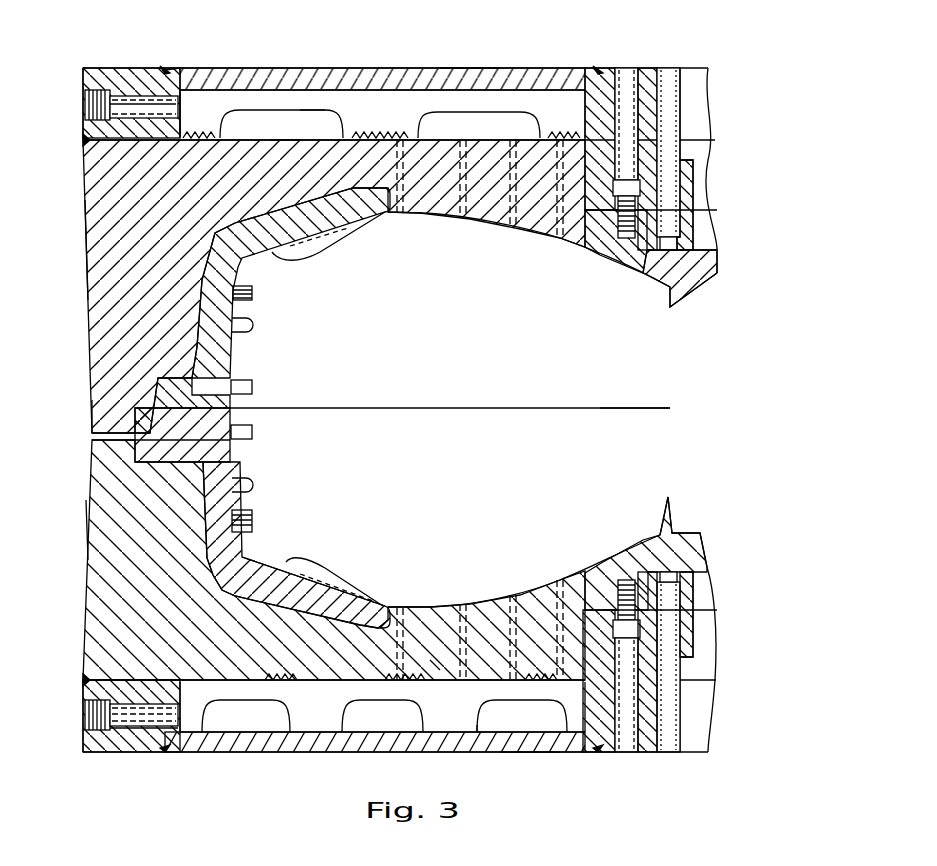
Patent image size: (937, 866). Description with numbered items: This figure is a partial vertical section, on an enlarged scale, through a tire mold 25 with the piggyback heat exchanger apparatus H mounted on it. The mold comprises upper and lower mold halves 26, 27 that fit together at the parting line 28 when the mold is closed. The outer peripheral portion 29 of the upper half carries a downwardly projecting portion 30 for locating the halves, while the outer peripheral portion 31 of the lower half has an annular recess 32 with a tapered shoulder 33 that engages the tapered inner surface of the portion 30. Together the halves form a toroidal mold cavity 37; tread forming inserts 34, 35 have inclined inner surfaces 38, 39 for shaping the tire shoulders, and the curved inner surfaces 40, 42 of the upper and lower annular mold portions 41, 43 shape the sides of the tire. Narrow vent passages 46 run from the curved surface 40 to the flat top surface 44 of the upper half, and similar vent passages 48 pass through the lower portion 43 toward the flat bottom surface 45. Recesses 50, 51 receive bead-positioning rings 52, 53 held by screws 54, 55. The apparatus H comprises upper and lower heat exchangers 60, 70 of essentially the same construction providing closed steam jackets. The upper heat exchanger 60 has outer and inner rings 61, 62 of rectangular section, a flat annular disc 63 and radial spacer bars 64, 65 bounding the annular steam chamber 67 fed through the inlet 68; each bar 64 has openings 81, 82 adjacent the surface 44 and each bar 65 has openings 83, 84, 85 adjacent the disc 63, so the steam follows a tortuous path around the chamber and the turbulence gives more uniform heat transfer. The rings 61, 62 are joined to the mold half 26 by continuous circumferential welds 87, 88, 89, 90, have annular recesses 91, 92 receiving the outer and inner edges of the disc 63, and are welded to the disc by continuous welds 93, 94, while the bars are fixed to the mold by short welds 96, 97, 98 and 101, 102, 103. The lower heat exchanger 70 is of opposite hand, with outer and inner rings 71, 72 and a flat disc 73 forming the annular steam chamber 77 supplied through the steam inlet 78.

The tire mold 25 is at (83, 440).
The upper mold half 26 is at (83, 226).
The lower mold half 27 is at (86, 560).
The parting line 28 is at (600, 408).
The outer peripheral portion 29 is at (89, 300).
The downwardly projecting portion 30 is at (92, 412).
The outer peripheral portion 31 is at (88, 524).
The annular recess 32 is at (118, 445).
The tapered shoulder 33 is at (152, 400).
The tread forming insert 34 is at (235, 352).
The tread forming insert 35 is at (250, 527).
The toroidal mold cavity 37 is at (445, 397).
The inclined inner surface 38 is at (318, 246).
The inclined inner surface 39 is at (312, 560).
The curved inner surface 40 is at (490, 226).
The upper annular mold portion 41 is at (423, 215).
The curved inner surface 42 is at (520, 592).
The lower annular mold portion 43 is at (460, 602).
The top surface 44 is at (286, 140).
The flat horizontal bottom surface 45 is at (330, 680).
The vent passages 46 is at (462, 162).
The vent passages 48 is at (436, 668).
The recess 50 is at (655, 218).
The recess 51 is at (662, 596).
The bead-positioning ring 52 is at (650, 262).
The bead-positioning ring 53 is at (666, 535).
The screw 54 is at (640, 188).
The screw 55 is at (640, 630).
The upper heat exchanger 60 is at (248, 68).
The outer ring 61 is at (130, 68).
The inner ring 62 is at (652, 88).
The flat annular plate or disc 63 is at (470, 80).
The radial supporting bar 64 is at (527, 100).
The radial supporting bar 65 is at (316, 752).
The annular steam chamber 67 is at (272, 110).
The inlet 68 is at (100, 90).
The lower heat exchanger 70 is at (83, 752).
The outer ring 71 is at (120, 752).
The inner ring 72 is at (656, 722).
The flat disc 73 is at (271, 752).
The annular steam chamber 77 is at (530, 745).
The steam inlet 78 is at (84, 716).
The opening 81 is at (320, 113).
The opening 82 is at (487, 120).
The opening 83 is at (282, 716).
The opening 84 is at (396, 700).
The opening 85 is at (478, 718).
The continuous circumferential weld 87 is at (80, 143).
The continuous circumferential weld 88 is at (183, 137).
The continuous circumferential weld 89 is at (583, 138).
The continuous circumferential weld 90 is at (684, 139).
The annular recess 91 is at (184, 90).
The annular recess 92 is at (584, 90).
The continuous circumferential weld 93 is at (167, 68).
The continuous circumferential weld 94 is at (600, 69).
The short weld 96 is at (200, 141).
The short weld 97 is at (382, 143).
The short weld 98 is at (575, 144).
The short weld 101 is at (270, 678).
The short weld 102 is at (400, 680).
The short weld 103 is at (560, 680).
The apparatus H is at (80, 100).